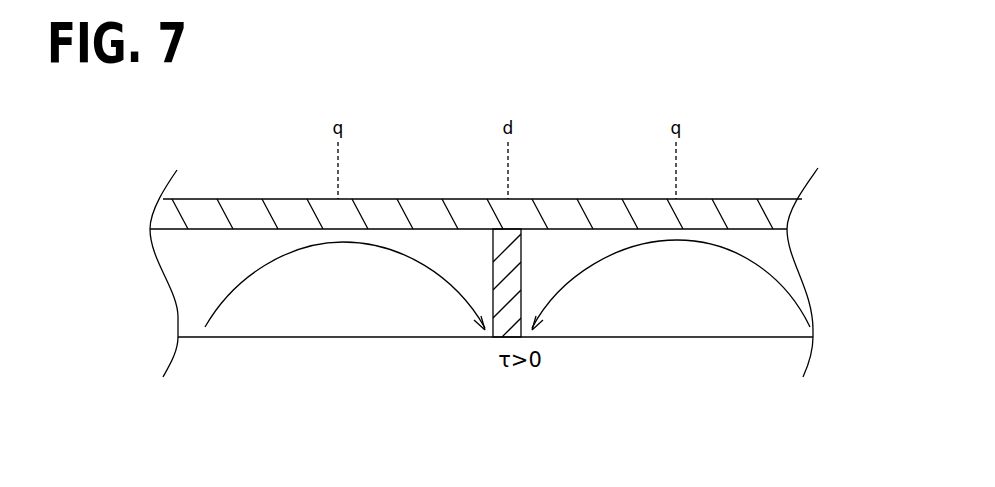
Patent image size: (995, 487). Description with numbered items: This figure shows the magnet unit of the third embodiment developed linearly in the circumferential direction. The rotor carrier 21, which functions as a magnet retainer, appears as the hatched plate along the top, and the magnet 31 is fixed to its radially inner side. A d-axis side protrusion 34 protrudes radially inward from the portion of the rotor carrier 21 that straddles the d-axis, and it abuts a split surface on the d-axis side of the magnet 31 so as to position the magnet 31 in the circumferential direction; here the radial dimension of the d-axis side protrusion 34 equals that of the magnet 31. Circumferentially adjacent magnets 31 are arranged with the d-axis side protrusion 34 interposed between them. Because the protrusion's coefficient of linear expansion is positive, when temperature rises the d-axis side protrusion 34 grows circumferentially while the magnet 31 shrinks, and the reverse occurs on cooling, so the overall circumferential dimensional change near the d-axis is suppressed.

The rotor carrier 21 is at (747, 199).
The magnet 31 is at (313, 337).
The d-axis side protrusion 34 is at (521, 252).